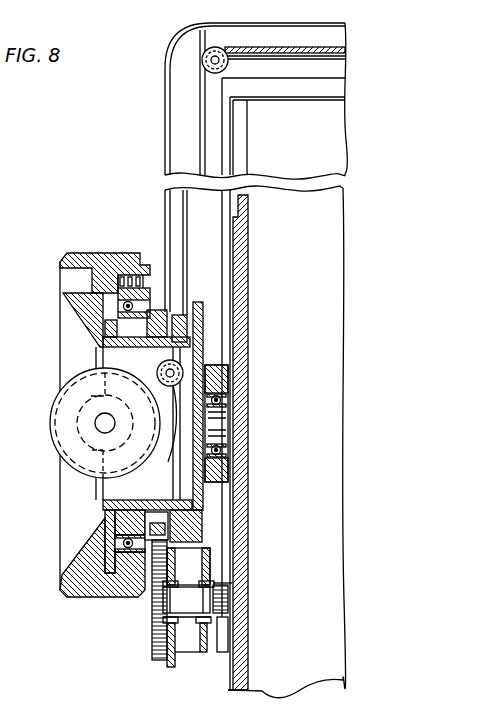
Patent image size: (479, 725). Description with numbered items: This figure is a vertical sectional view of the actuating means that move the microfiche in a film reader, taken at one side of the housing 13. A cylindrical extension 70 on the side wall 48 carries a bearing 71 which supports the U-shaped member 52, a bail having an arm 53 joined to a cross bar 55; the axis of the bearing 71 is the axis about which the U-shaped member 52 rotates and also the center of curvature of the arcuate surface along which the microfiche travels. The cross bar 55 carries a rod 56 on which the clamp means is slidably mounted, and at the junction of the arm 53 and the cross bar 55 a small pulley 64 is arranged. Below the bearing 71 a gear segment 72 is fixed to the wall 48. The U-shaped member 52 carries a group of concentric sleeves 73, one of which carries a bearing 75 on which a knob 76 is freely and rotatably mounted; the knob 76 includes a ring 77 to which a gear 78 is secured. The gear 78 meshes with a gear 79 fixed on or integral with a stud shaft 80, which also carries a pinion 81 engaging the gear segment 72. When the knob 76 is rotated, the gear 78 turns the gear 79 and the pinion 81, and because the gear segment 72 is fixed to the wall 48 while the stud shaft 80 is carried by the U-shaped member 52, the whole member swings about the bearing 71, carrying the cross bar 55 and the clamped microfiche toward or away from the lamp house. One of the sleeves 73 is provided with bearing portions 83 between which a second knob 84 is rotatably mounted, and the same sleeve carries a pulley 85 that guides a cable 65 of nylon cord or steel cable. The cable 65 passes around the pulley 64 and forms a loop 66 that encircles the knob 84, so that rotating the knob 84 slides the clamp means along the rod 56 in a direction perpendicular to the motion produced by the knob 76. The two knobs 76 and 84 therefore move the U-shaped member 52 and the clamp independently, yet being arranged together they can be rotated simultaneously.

The housing 13 is at (247, 667).
The side wall 48 is at (250, 236).
The U-shaped member 52 is at (187, 654).
The arm 53 is at (176, 202).
The cross bar 55 is at (333, 40).
The rod 56 is at (327, 60).
The pulley 64 is at (201, 58).
The cable 65 is at (199, 116).
The loop 66 is at (164, 433).
The cylindrical extension 70 is at (220, 380).
The bearing 71 is at (227, 450).
The gear segment 72 is at (221, 638).
The concentric sleeves 73 is at (106, 490).
The bearing 75 is at (113, 532).
The knob 76 is at (73, 256).
The ring 77 is at (122, 577).
The gear 78 is at (156, 312).
The gear 79 is at (157, 638).
The stud shaft 80 is at (173, 593).
The pinion 81 is at (231, 594).
The bearing portions 83 is at (58, 387).
The knob 84 is at (52, 417).
The pulley 85 is at (183, 363).